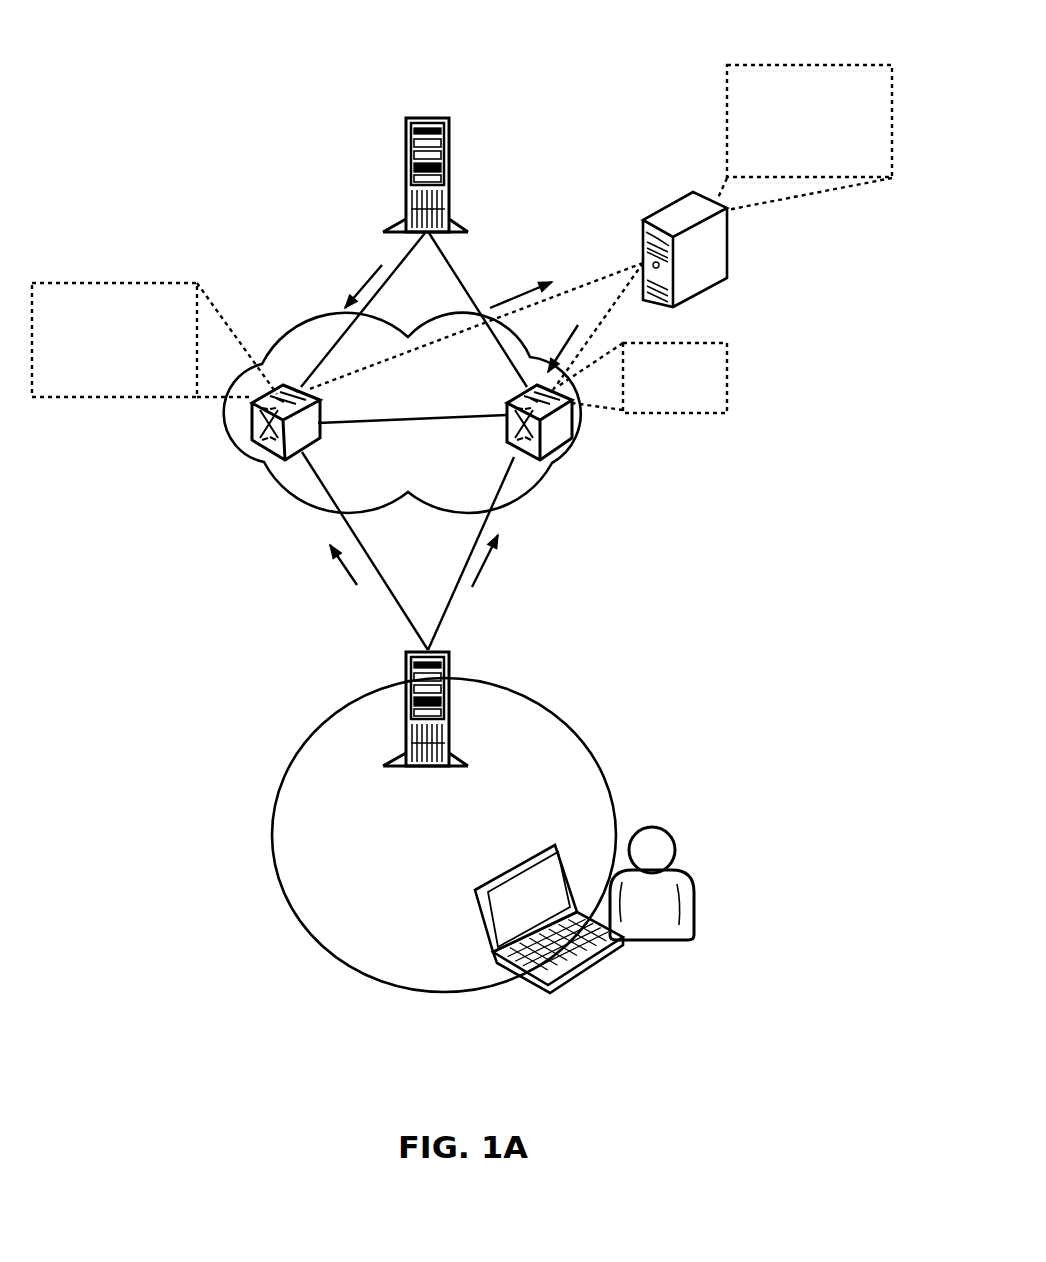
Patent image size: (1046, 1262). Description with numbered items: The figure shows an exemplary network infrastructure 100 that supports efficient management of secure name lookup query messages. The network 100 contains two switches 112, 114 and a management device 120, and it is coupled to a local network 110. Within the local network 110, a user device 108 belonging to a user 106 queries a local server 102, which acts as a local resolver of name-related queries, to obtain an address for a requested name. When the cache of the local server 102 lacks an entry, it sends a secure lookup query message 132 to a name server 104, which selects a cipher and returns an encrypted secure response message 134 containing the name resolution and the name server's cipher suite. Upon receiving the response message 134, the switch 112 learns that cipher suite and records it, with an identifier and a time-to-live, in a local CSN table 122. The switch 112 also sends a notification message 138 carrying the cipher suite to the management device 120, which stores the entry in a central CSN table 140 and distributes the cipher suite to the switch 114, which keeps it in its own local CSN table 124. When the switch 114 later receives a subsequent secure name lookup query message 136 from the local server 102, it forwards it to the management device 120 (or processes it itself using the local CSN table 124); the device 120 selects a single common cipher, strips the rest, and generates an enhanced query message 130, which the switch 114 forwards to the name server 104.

The network infrastructure 100 is at (203, 410).
The local server 102 is at (452, 705).
The name server 104 is at (428, 118).
The user 106 is at (660, 826).
The user device 108 is at (603, 963).
The local network 110 is at (274, 832).
The switch 112 is at (328, 432).
The switch 114 is at (505, 418).
The management device 120 is at (728, 230).
The local CSN table 122 is at (96, 382).
The local CSN table 124 is at (658, 387).
The enhanced query message 130 is at (553, 350).
The secure lookup query message 132 is at (345, 572).
The secure response message 134 is at (363, 287).
The subsequent secure name lookup query message 136 is at (483, 553).
The notification message 138 is at (523, 287).
The central CSN table 140 is at (791, 162).